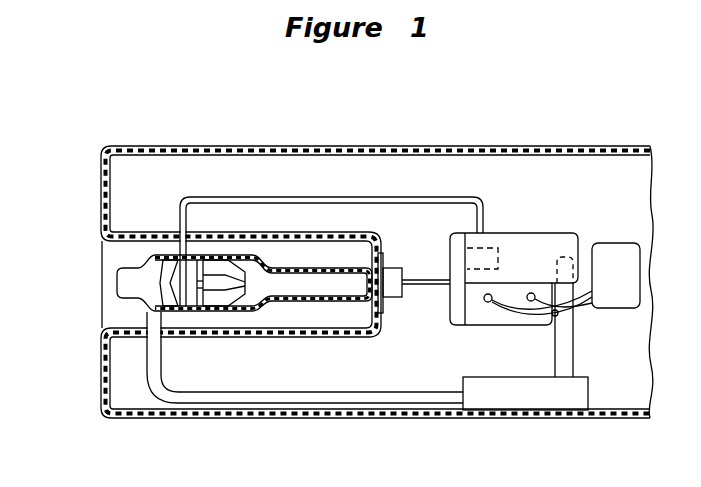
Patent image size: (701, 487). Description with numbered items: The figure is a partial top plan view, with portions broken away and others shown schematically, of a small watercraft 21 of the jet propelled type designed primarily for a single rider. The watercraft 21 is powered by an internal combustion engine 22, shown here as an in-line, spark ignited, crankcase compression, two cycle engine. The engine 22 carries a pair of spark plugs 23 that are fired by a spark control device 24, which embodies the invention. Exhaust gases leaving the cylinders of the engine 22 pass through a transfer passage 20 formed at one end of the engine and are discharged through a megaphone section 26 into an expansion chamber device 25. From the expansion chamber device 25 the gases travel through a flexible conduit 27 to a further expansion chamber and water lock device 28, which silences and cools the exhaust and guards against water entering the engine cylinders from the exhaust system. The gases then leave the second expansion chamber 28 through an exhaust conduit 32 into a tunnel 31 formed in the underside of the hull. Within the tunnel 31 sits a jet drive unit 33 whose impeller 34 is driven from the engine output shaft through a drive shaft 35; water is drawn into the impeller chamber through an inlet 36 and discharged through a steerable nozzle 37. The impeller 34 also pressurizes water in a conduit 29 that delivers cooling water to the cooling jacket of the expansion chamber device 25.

The transfer passage 20 is at (455, 323).
The small watercraft 21 is at (342, 275).
The internal combustion engine 22 is at (474, 327).
The spark plugs 23 is at (489, 294).
The spark control device 24 is at (623, 252).
The expansion chamber device 25 is at (557, 234).
The megaphone section 26 is at (490, 247).
The flexible conduit 27 is at (568, 356).
The expansion chamber and water lock device 28 is at (497, 397).
The conduit 29 is at (263, 196).
The tunnel 31 is at (120, 328).
The exhaust conduit 32 is at (292, 393).
The jet drive unit 33 is at (245, 254).
The impeller 34 is at (213, 298).
The drive shaft 35 is at (410, 286).
The inlet 36 is at (238, 298).
The steerable nozzle 37 is at (122, 283).